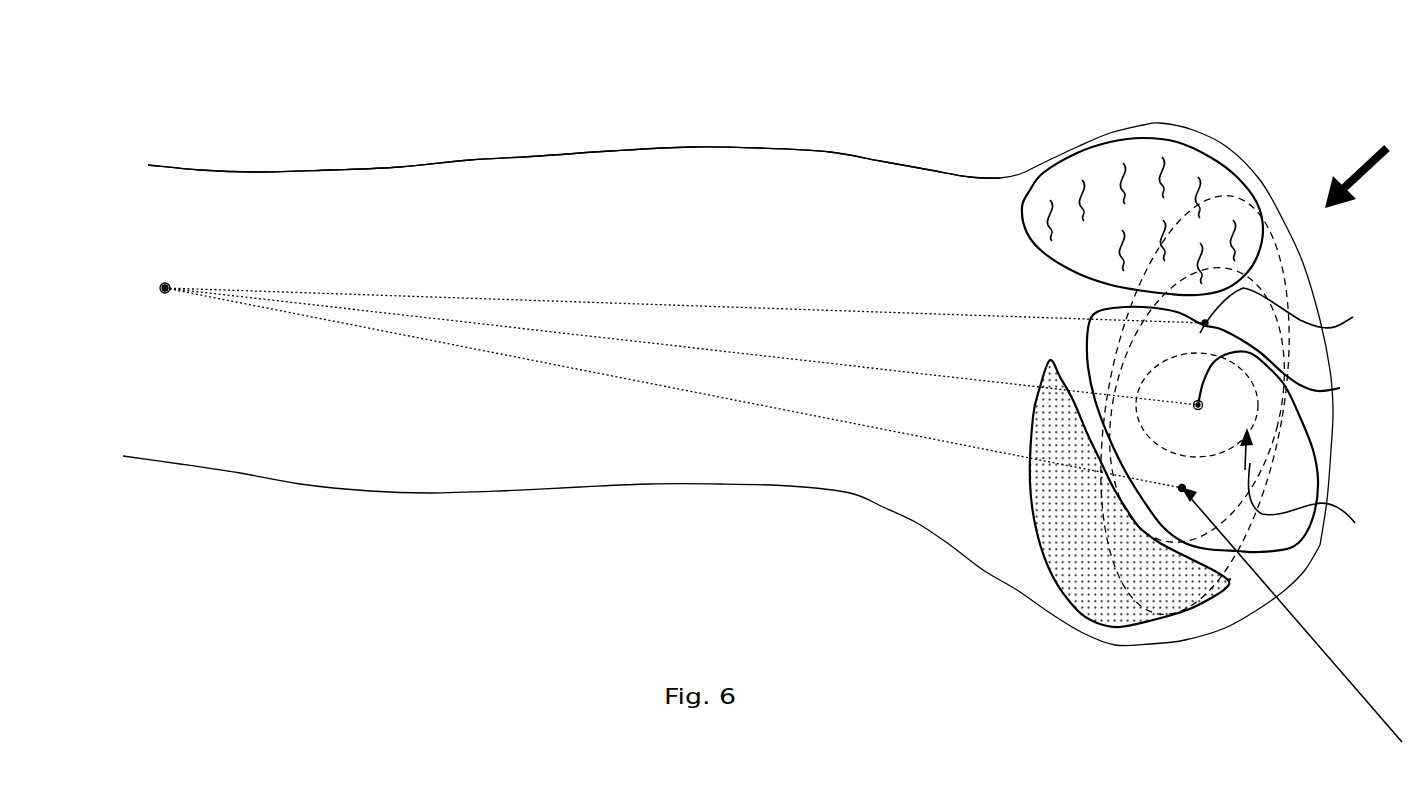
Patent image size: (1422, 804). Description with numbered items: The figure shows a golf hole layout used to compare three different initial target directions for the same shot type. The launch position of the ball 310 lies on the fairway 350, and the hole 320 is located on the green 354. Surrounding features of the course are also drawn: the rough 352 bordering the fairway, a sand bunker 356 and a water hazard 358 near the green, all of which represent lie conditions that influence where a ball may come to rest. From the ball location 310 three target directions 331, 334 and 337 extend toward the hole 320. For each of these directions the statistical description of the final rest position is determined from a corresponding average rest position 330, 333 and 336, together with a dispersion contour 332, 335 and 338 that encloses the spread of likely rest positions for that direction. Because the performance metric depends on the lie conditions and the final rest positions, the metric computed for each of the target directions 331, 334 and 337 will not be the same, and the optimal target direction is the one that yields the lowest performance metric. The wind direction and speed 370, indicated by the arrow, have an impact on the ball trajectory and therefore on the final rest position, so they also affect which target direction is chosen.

The ball location 310 is at (170, 284).
The hole 320 is at (1326, 499).
The average rest position 330 is at (1340, 388).
The target direction 331 is at (906, 375).
The dispersion contour 332 is at (1273, 430).
The average rest position 333 is at (1402, 742).
The target direction 334 is at (918, 439).
The dispersion contour 335 is at (1230, 578).
The average rest position 336 is at (1306, 318).
The target direction 337 is at (918, 316).
The dispersion contour 338 is at (1288, 278).
The fairway 350 is at (302, 198).
The rough 352 is at (448, 126).
The green 354 is at (1300, 475).
The sand bunker 356 is at (1120, 613).
The water hazard 358 is at (1232, 202).
The wind direction and speed 370 is at (1362, 170).